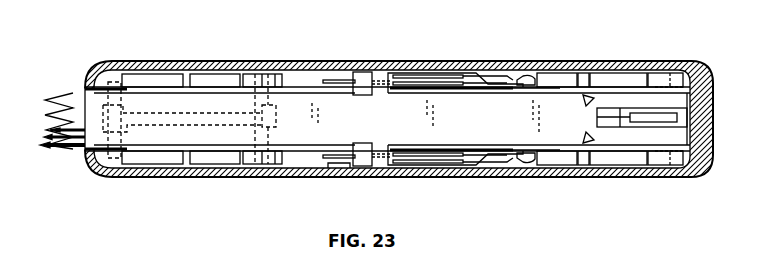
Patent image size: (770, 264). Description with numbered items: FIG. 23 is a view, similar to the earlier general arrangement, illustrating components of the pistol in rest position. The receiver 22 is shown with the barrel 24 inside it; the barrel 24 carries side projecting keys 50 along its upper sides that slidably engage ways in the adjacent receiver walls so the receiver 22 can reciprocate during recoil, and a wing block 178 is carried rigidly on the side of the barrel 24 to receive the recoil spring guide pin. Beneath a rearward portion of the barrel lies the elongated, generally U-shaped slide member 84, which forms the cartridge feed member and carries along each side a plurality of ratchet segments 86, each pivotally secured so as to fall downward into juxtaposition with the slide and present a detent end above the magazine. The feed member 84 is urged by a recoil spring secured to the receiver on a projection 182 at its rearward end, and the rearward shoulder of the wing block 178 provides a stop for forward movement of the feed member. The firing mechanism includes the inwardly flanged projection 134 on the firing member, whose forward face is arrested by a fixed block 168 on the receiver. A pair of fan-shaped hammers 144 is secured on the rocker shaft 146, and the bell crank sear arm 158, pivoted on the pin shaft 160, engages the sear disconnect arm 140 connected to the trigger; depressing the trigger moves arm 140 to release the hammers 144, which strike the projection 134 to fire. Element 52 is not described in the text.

The receiver 22 is at (707, 106).
The barrel 24 is at (57, 117).
The keys 50 is at (663, 80).
The guide block 52 is at (623, 80).
The slide member 84 is at (477, 88).
The ratchet segments 86 is at (335, 82).
The inwardly flanged projection 134 is at (212, 82).
The sear disconnect arm 140 is at (347, 177).
The hammers 144 is at (252, 82).
The rocker shaft 146 is at (265, 137).
The bell crank sear arm 158 is at (157, 120).
The pin shaft 160 is at (110, 102).
The fixed block 168 is at (143, 158).
The wing block 178 is at (375, 80).
The projection 182 is at (548, 82).